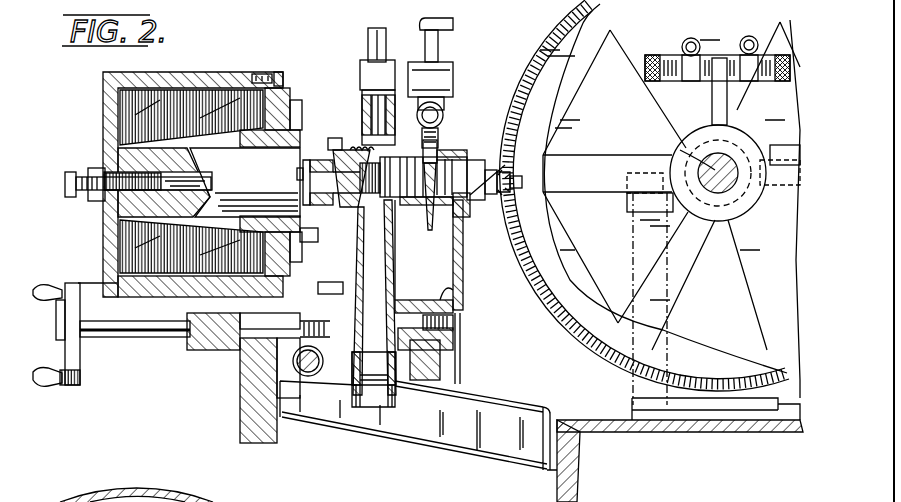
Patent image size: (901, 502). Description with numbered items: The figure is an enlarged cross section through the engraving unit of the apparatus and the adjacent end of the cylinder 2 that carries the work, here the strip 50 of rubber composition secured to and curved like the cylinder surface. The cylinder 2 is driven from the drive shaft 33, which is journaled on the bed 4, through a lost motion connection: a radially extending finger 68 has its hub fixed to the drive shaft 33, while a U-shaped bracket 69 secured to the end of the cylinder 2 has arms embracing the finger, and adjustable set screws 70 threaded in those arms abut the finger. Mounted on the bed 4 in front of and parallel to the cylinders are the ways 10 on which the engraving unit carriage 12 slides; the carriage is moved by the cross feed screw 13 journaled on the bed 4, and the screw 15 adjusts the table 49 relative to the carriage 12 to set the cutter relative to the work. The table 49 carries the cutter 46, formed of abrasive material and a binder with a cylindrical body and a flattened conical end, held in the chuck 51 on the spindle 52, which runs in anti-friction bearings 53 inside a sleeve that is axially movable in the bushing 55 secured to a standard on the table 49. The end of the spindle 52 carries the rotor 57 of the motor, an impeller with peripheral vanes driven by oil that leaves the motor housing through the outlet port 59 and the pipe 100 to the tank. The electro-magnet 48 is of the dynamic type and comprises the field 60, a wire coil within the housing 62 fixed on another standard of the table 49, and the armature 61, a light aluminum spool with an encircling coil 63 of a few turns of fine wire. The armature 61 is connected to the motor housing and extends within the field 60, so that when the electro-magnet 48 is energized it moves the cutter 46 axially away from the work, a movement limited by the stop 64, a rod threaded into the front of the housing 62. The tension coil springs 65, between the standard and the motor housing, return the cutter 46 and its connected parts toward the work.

The cylinder 2 is at (547, 32).
The bed 4 is at (624, 434).
The ways 10 is at (247, 430).
The engraving unit carriage 12 is at (430, 456).
The cross feed screw 13 is at (311, 368).
The screw 15 is at (168, 334).
The drive shaft 33 is at (720, 210).
The cutter 46 is at (499, 162).
The electro-magnet 48 is at (257, 60).
The table 49 is at (462, 290).
The strip 50 is at (526, 72).
The chuck 51 is at (487, 170).
The spindle 52 is at (428, 215).
The anti-friction bearing 53 is at (470, 217).
The bushing 55 is at (415, 140).
The rotor 57 is at (355, 210).
The outlet port 59 is at (318, 236).
The field 60 is at (176, 262).
The armature 61 is at (334, 128).
The housing 62 is at (216, 72).
The coil 63 is at (327, 130).
The stop 64 is at (68, 183).
The tension coil springs 65 is at (350, 152).
The finger 68 is at (712, 100).
The U-shaped bracket 69 is at (746, 38).
The set screws 70 is at (692, 40).
The pipe 100 is at (386, 408).